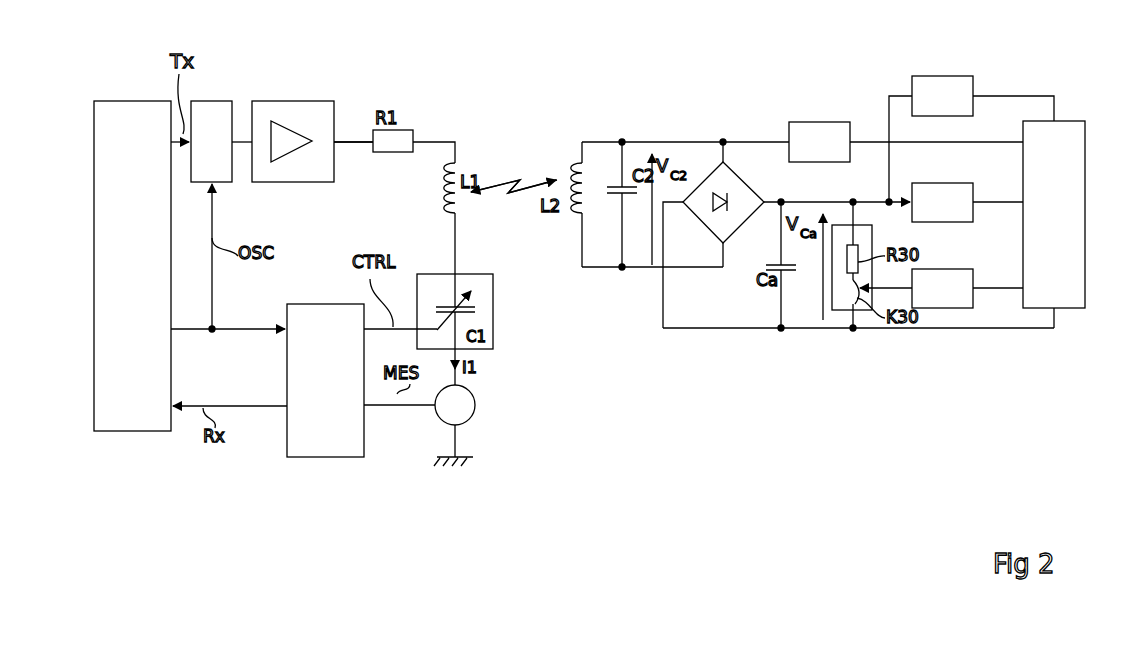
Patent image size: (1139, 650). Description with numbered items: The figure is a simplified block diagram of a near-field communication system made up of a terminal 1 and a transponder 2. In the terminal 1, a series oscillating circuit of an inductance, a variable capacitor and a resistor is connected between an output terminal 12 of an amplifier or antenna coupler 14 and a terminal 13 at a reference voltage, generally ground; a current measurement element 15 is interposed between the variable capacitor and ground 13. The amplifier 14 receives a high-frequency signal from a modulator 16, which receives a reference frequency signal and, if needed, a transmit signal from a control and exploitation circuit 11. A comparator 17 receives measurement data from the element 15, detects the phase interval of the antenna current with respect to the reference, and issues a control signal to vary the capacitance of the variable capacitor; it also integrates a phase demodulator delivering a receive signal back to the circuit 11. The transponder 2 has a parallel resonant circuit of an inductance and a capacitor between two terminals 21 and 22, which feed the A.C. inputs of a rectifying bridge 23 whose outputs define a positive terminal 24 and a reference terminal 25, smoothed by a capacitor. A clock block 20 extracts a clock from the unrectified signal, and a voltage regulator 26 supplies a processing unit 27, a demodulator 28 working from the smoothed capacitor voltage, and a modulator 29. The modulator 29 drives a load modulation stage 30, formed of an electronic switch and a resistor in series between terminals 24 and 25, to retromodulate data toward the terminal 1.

The terminal 1 is at (253, 492).
The transponder 2 is at (749, 427).
The circuit for controlling and exploiting the transmissions 11 is at (130, 101).
The output terminal of the amplifier 12 is at (352, 143).
The reference voltage terminal 13 is at (455, 447).
The amplifier or antenna coupler 14 is at (295, 101).
The current measurement element 15 is at (475, 410).
The modulator 16 is at (210, 101).
The comparator 17 is at (313, 457).
The clock extraction block 20 is at (812, 122).
The first terminal of the transponder oscillating circuit 21 is at (622, 142).
The second terminal of the transponder oscillating circuit 22 is at (622, 267).
The rectifying bridge 23 is at (742, 186).
The positive terminal 24 is at (781, 202).
The reference terminal 25 is at (781, 328).
The voltage regulator 26 is at (960, 76).
The processing unit 27 is at (1085, 160).
The demodulator 28 is at (935, 183).
The modulator 29 is at (935, 269).
The load modulation stage 30 is at (872, 240).